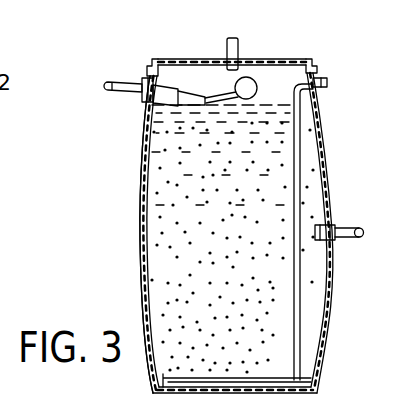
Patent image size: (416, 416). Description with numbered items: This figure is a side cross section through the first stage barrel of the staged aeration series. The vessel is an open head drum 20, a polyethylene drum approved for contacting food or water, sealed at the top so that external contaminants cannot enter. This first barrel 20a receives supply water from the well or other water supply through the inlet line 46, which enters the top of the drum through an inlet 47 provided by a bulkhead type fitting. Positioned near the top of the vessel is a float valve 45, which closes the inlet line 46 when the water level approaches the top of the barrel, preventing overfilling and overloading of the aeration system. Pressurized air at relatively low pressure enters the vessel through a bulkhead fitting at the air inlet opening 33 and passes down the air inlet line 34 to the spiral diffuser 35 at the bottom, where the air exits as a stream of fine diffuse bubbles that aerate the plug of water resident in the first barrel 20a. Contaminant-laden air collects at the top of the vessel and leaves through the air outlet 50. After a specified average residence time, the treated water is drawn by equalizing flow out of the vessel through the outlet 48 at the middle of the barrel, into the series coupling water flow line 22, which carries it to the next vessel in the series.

The open head drum 20 is at (166, 237).
The first barrel 20a is at (137, 238).
The water flow line 22 is at (349, 238).
The air inlet opening 33 is at (317, 80).
The air inlet line 34 is at (303, 163).
The spiral diffuser 35 is at (257, 371).
The float valve 45 is at (194, 82).
The inlet line 46 is at (128, 82).
The inlet 47 is at (145, 78).
The outlet 48 is at (333, 227).
The air outlet 50 is at (238, 50).